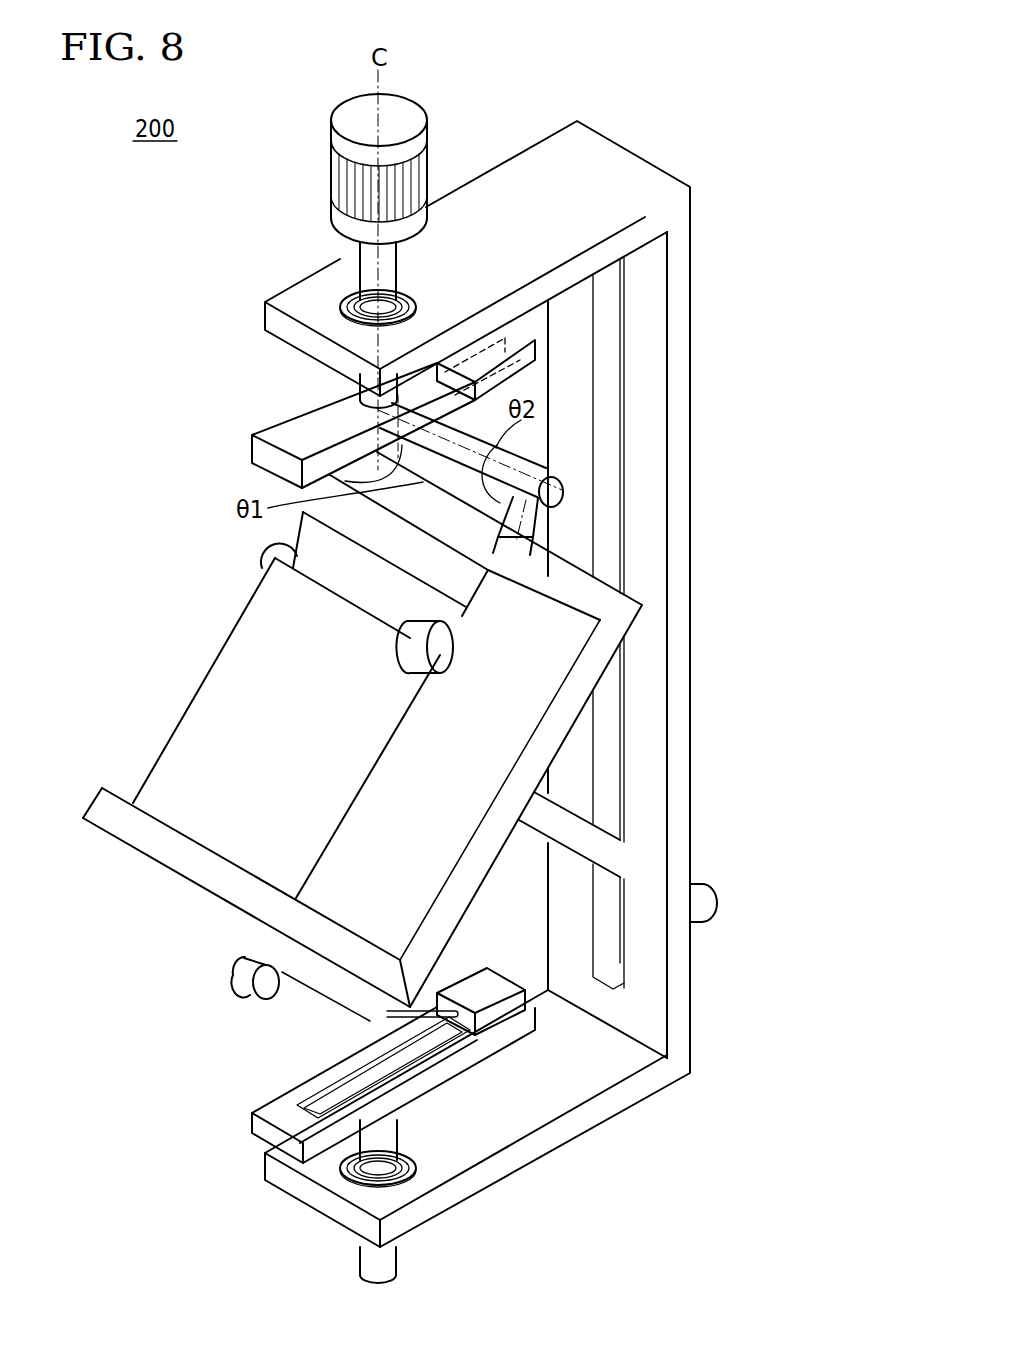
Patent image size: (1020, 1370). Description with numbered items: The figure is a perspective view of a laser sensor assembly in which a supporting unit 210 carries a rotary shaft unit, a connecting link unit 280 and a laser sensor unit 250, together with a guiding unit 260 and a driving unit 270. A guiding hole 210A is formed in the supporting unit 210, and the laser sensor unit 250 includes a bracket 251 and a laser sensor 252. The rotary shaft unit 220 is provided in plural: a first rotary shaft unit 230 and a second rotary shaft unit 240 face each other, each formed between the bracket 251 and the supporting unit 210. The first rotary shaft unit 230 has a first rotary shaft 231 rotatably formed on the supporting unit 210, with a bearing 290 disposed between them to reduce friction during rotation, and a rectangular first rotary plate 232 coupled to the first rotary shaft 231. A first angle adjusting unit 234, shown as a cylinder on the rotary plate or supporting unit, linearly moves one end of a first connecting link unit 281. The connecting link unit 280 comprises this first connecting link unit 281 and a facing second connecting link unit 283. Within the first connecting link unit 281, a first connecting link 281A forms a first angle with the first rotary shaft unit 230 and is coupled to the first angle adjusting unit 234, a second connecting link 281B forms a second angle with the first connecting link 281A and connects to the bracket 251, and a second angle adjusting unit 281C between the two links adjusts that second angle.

The supporting unit 210 is at (618, 168).
The guiding hole 210A is at (612, 356).
The rotary shaft unit 220 is at (73, 358).
The first rotary shaft unit 230 is at (132, 270).
The first rotary shaft 231 is at (368, 272).
The first rotary plate 232 is at (255, 450).
The first angle adjusting unit 234 is at (357, 371).
The second rotary shaft unit 240 is at (370, 1143).
The laser sensor unit 250 is at (681, 1172).
The bracket 251 is at (527, 1003).
The laser sensor 252 is at (322, 798).
The guiding unit 260 is at (580, 852).
The driving unit 270 is at (343, 166).
The connecting link unit 280 is at (822, 487).
The first connecting link unit 281 is at (765, 450).
The first connecting link 281A is at (520, 435).
The second connecting link 281B is at (532, 522).
The second angle adjusting unit 281C is at (560, 486).
The second connecting link unit 283 is at (307, 1003).
The bearing 290 is at (414, 300).